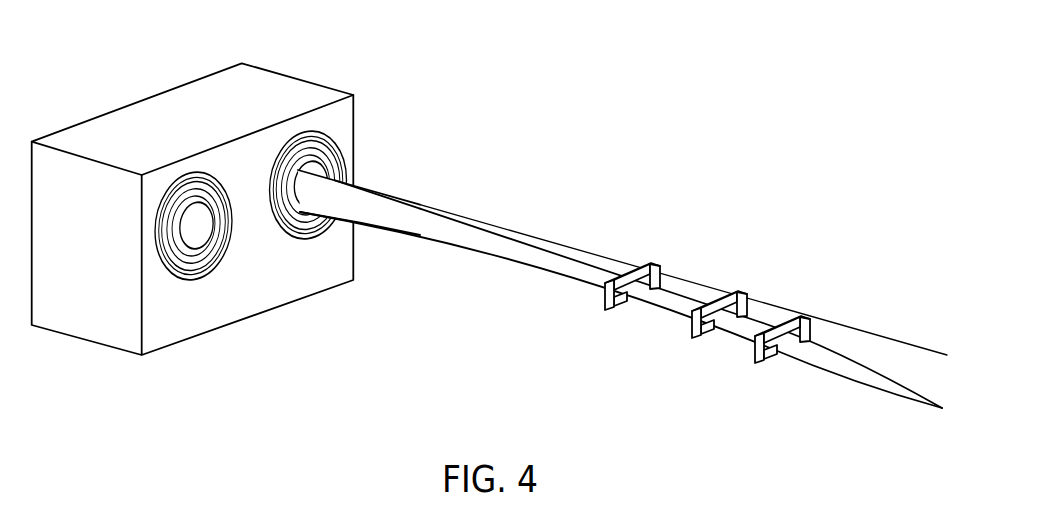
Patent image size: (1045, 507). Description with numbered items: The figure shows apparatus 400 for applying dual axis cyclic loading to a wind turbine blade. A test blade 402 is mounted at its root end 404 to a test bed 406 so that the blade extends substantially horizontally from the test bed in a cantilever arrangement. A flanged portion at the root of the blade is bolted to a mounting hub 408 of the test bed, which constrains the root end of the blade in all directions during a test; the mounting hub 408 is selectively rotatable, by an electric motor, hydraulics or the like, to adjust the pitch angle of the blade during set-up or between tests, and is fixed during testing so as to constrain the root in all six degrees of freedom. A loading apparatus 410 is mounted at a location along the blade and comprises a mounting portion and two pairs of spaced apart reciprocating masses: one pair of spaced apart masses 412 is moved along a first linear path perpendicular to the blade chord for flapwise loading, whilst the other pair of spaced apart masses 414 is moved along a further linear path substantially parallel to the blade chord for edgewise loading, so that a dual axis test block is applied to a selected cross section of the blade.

The apparatus 400 is at (670, 81).
The test blade 402 is at (526, 251).
The root end 404 is at (366, 173).
The test bed 406 is at (170, 110).
The mounting hub 408 is at (344, 147).
The loading apparatus 410 is at (677, 346).
The pair of spaced apart masses 412 is at (806, 322).
The pair of spaced apart masses 414 is at (778, 326).